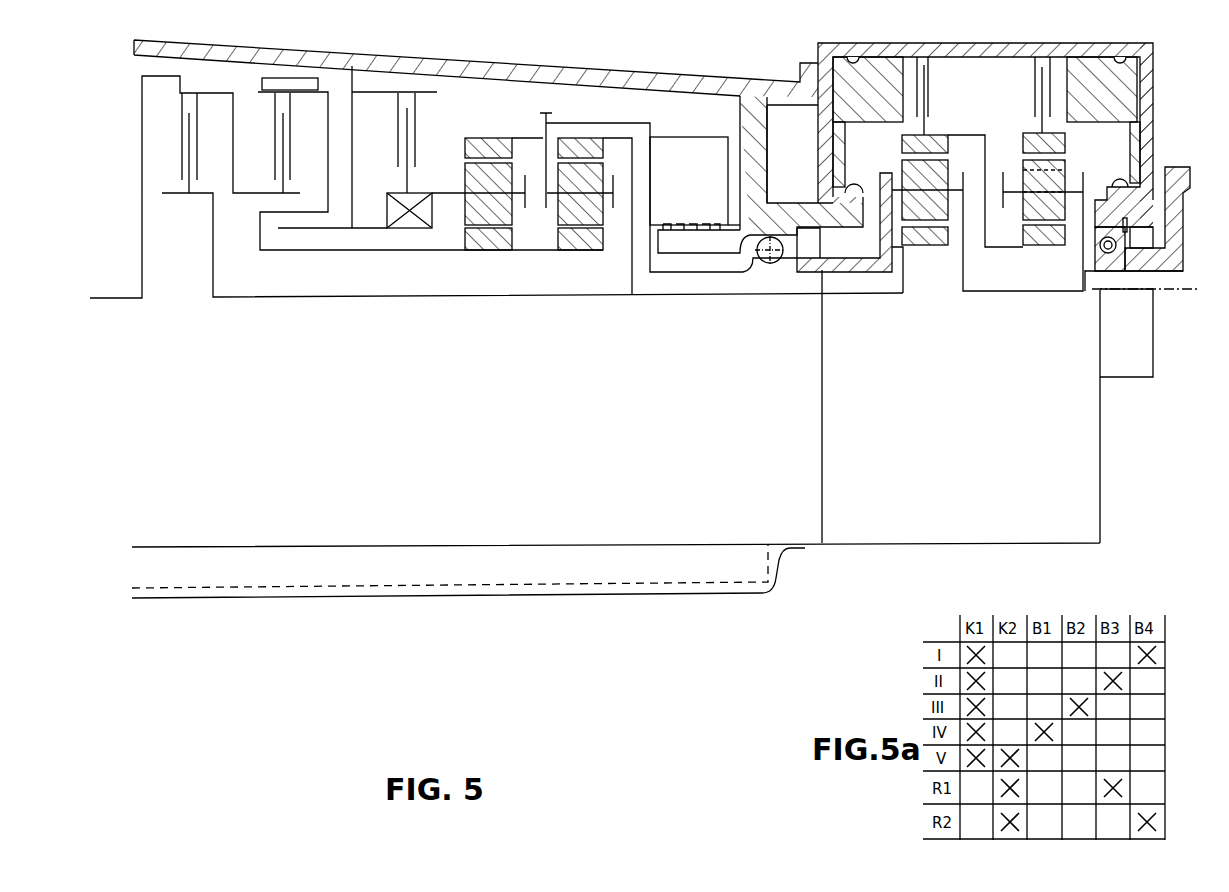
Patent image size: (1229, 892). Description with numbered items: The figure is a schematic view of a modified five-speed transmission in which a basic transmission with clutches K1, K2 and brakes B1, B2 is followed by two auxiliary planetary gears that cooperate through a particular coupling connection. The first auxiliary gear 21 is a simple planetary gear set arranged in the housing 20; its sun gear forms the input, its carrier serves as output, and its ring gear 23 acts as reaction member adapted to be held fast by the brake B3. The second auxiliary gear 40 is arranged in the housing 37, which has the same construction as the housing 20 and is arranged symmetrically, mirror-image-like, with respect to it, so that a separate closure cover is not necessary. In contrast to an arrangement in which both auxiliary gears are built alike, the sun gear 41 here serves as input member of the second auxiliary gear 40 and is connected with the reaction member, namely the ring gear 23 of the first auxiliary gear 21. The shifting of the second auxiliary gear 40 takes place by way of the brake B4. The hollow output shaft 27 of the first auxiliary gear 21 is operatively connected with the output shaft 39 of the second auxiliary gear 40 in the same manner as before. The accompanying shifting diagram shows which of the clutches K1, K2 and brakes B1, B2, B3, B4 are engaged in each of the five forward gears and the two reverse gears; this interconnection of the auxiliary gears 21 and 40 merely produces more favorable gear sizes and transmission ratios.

The housing 20 is at (903, 50).
The first auxiliary gear 21 is at (886, 159).
The ring gear 23 is at (935, 136).
The output shaft 27 is at (963, 292).
The housing 37 is at (1155, 95).
The output shaft 39 is at (1150, 272).
The second auxiliary gear 40 is at (1086, 157).
The sun gear 41 is at (1040, 245).
The brake B1 is at (264, 84).
The brake B2 is at (395, 160).
The brake B3 is at (935, 96).
The brake B4 is at (1030, 95).
The clutch K1 is at (496, 187).
The clutch K2 is at (430, 158).